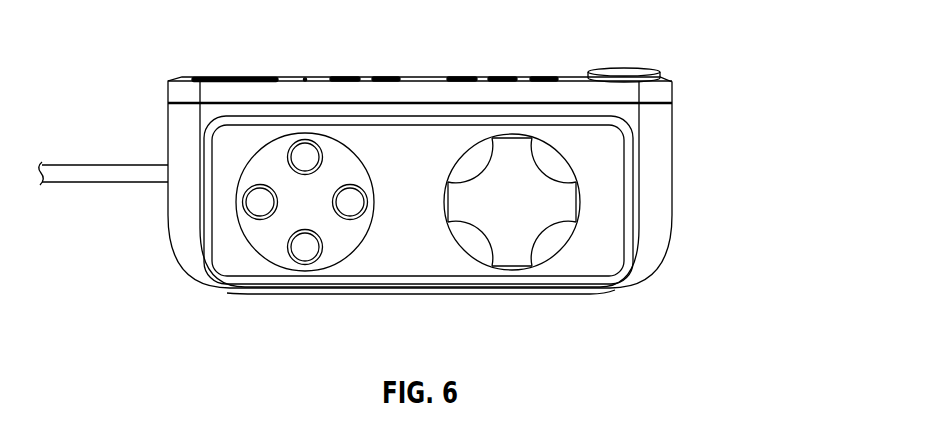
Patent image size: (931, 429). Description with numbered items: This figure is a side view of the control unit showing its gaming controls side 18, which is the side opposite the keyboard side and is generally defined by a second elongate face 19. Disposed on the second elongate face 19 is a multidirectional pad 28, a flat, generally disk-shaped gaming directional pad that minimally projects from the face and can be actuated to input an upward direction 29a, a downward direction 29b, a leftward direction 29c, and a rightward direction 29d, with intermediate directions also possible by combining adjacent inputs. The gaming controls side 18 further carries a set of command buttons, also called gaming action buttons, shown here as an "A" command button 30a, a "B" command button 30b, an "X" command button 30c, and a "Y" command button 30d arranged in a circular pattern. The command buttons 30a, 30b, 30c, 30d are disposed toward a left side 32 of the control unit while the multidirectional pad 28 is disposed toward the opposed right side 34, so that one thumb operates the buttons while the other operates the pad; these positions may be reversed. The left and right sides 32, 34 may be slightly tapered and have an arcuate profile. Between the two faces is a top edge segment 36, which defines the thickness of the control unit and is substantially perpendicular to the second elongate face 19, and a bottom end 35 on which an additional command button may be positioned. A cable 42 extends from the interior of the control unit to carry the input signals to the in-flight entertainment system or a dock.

The gaming controls side 18 is at (213, 297).
The second elongate face 19 is at (418, 143).
The multidirectional pad 28 is at (546, 191).
The upward direction 29a is at (512, 143).
The downward direction 29b is at (518, 260).
The leftward direction 29c is at (447, 205).
The rightward direction 29d is at (567, 202).
The "A" command button 30a is at (357, 215).
The "B" command button 30b is at (304, 263).
The "X" command button 30c is at (303, 140).
The "Y" command button 30d is at (256, 218).
The left side 32 is at (174, 232).
The right side 34 is at (675, 168).
The bottom end 35 is at (488, 306).
The top edge segment 36 is at (572, 74).
The cable 42 is at (93, 165).